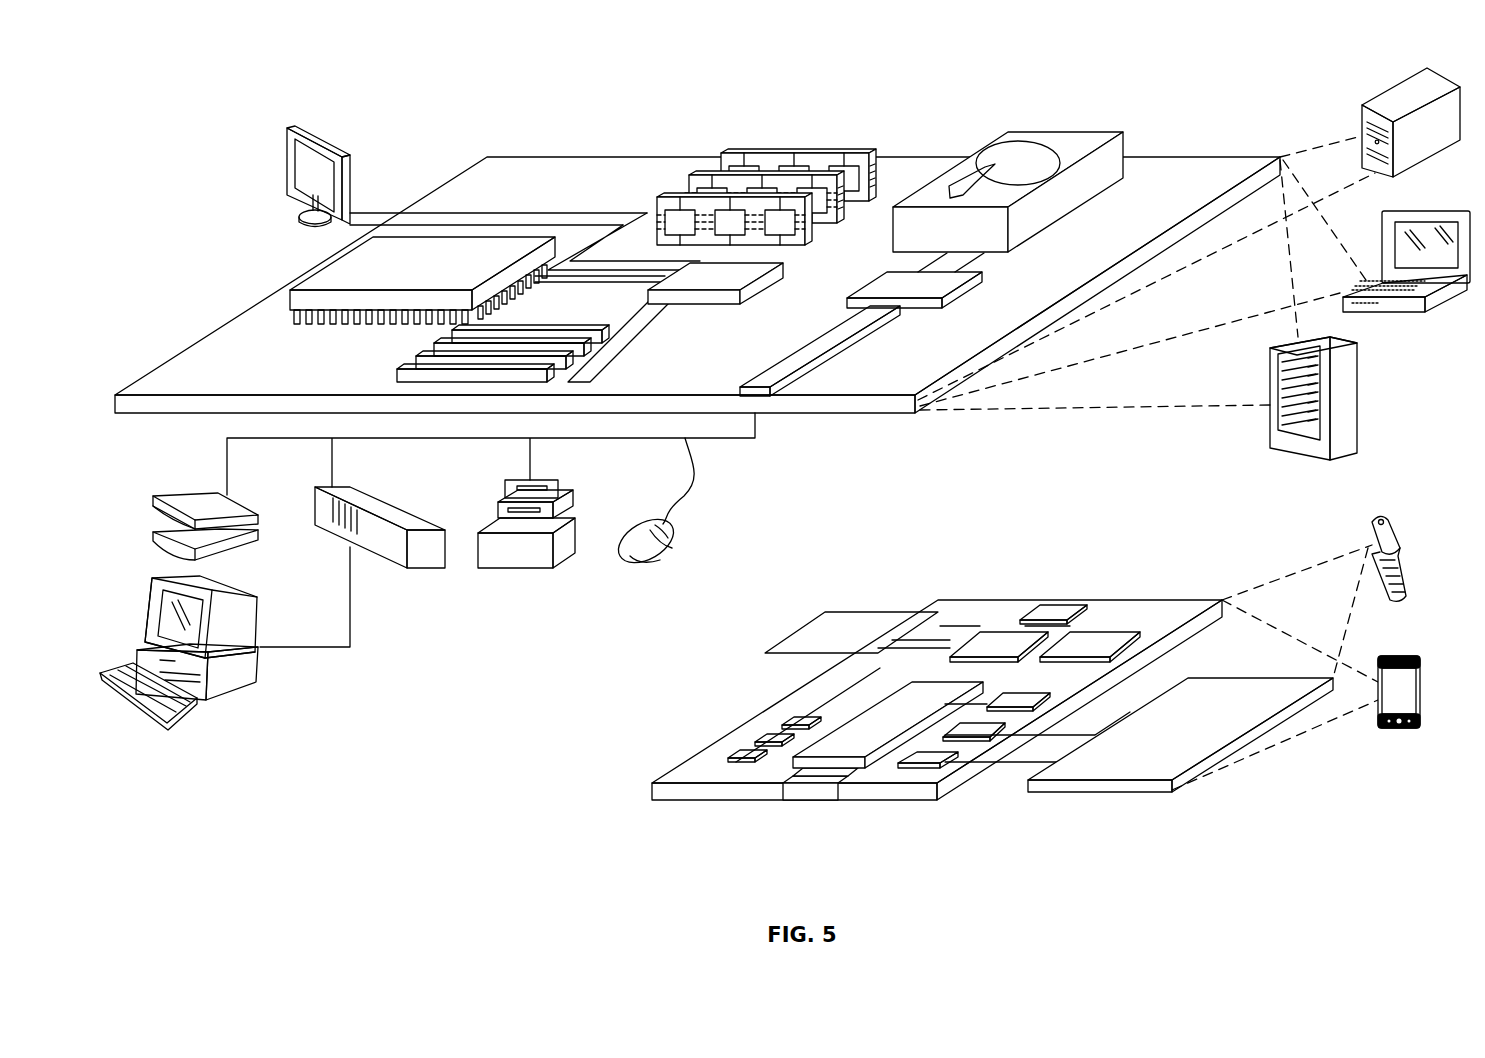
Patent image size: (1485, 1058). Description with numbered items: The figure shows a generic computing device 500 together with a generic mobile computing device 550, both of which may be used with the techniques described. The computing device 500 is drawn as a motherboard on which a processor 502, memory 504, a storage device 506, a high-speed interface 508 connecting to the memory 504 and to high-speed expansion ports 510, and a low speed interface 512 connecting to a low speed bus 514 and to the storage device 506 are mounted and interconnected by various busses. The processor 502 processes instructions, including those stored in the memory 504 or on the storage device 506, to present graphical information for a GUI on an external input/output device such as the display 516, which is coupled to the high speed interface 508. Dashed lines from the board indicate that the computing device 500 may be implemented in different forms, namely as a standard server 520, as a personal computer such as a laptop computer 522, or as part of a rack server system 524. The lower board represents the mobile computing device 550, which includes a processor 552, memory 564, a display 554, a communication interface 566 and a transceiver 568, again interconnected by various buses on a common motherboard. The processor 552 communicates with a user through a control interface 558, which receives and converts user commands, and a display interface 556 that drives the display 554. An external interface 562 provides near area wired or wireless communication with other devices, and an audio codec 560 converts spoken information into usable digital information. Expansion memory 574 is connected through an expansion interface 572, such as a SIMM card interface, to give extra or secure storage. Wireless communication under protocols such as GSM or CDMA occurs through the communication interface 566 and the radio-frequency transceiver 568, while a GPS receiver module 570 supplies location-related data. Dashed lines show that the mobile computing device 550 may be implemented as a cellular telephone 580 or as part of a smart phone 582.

The computing device 500 is at (428, 98).
The processor 502 is at (318, 270).
The memory 504 is at (804, 152).
The storage device 506 is at (1055, 132).
The high-speed interface 508 is at (736, 275).
The high-speed expansion ports 510 is at (423, 355).
The low speed interface 512 is at (887, 283).
The low speed bus 514 is at (762, 382).
The display 516 is at (292, 125).
The standard server 520 is at (1385, 100).
The laptop computer 522 is at (1443, 210).
The rack server system 524 is at (1360, 400).
The mobile computing device 550 is at (600, 810).
The processor 552 is at (856, 745).
The display 554 is at (1222, 692).
The display interface 556 is at (948, 765).
The control interface 558 is at (1012, 733).
The audio codec 560 is at (1022, 695).
The external interface 562 is at (813, 792).
The memory 564 is at (760, 742).
The communication interface 566 is at (998, 637).
The transceiver 568 is at (1100, 635).
The GPS receiver module 570 is at (1055, 610).
The expansion interface 572 is at (917, 612).
The expansion memory 574 is at (827, 612).
The cellular telephone 580 is at (1380, 518).
The smart phone 582 is at (1392, 656).